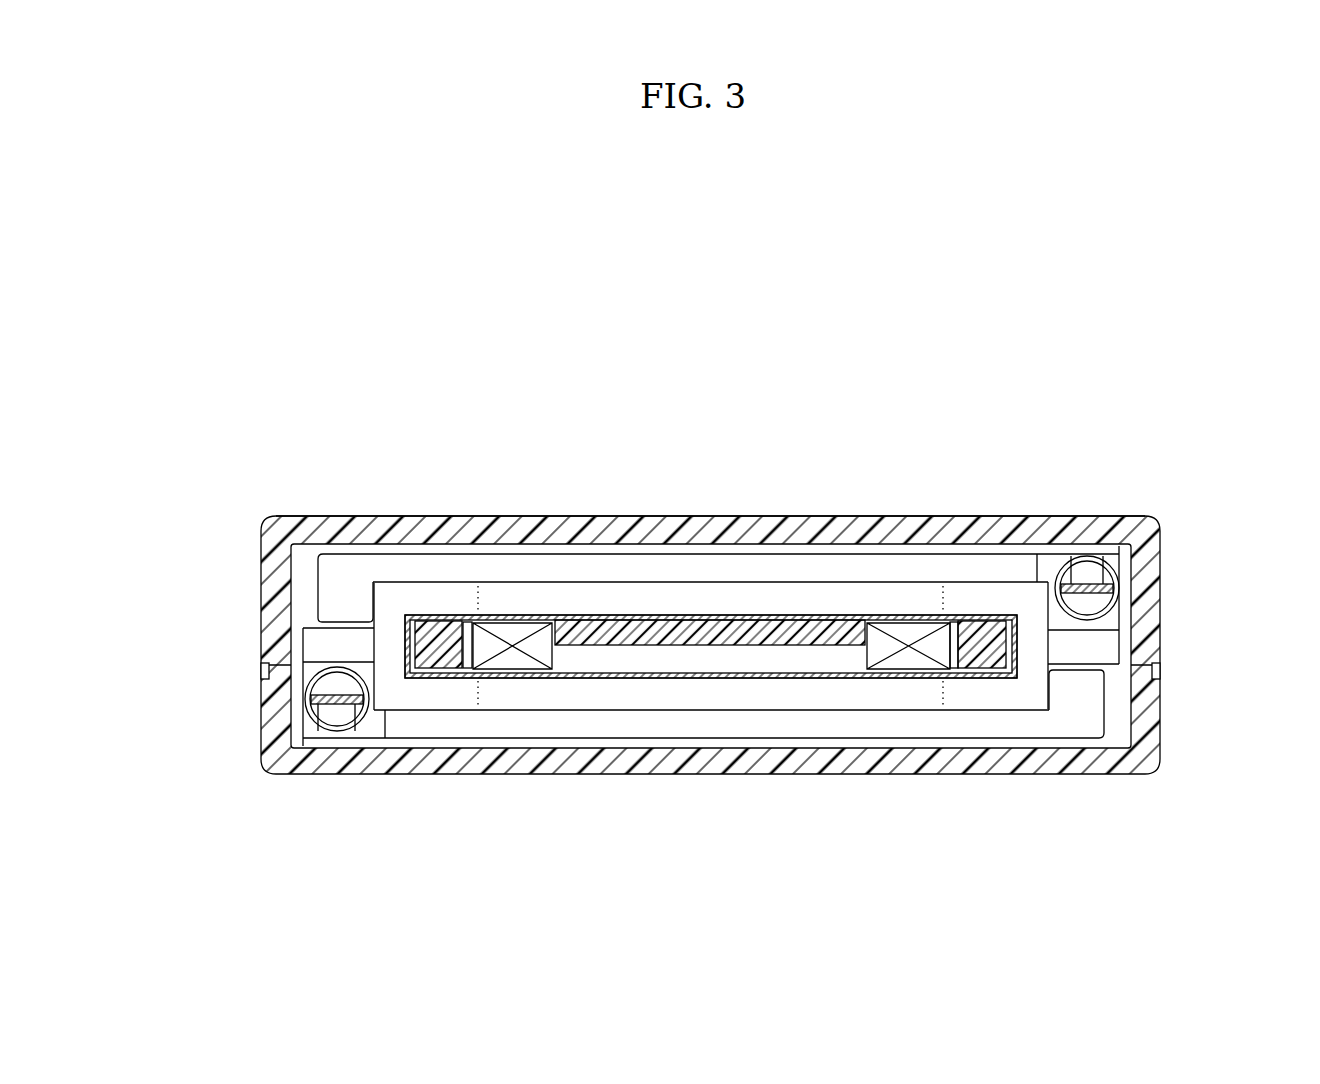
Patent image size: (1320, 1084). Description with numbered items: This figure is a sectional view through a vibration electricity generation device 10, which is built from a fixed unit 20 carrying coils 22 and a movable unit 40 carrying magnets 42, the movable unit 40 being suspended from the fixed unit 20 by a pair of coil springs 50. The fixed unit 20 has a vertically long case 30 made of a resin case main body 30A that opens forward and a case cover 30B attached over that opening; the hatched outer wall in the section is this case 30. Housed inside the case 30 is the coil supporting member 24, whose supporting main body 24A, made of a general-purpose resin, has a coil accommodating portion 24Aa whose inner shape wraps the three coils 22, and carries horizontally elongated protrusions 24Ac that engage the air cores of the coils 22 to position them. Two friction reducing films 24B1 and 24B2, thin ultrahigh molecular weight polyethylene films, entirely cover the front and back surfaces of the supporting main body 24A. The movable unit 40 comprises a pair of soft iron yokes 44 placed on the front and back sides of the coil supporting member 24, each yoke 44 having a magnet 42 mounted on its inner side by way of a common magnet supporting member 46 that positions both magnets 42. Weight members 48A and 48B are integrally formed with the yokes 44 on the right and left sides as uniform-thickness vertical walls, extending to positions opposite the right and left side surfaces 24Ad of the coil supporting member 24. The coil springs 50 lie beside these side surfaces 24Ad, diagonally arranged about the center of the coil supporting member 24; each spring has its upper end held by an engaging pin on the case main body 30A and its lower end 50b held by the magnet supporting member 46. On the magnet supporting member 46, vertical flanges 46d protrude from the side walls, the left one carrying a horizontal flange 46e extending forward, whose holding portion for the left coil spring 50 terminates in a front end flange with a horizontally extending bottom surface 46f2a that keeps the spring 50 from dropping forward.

The vibration electricity generation device 10 is at (541, 363).
The fixed unit 20 is at (944, 513).
The coil 22 is at (911, 677).
The coil supporting member 24 is at (427, 606).
The supporting main body 24A is at (463, 645).
The coil accommodating portion 24Aa is at (522, 674).
The protrusion 24Ac is at (755, 645).
The side surface 24Ad is at (1012, 647).
The friction reducing film 24B1 is at (467, 612).
The friction reducing film 24B2 is at (453, 612).
The case 30 is at (663, 696).
The case main body 30A is at (270, 558).
The case cover 30B is at (270, 722).
The movable unit 40 is at (823, 545).
The magnet 42 is at (729, 574).
The yoke 44 is at (653, 555).
The magnet supporting member 46 is at (576, 580).
The vertical flange 46d is at (1075, 652).
The horizontal flange 46e is at (1110, 622).
The bottom surface 46f2a is at (1092, 572).
The weight member 48A is at (1063, 573).
The weight member 48B is at (333, 600).
The coil spring 50 is at (1122, 559).
The lower end 50b is at (1097, 597).